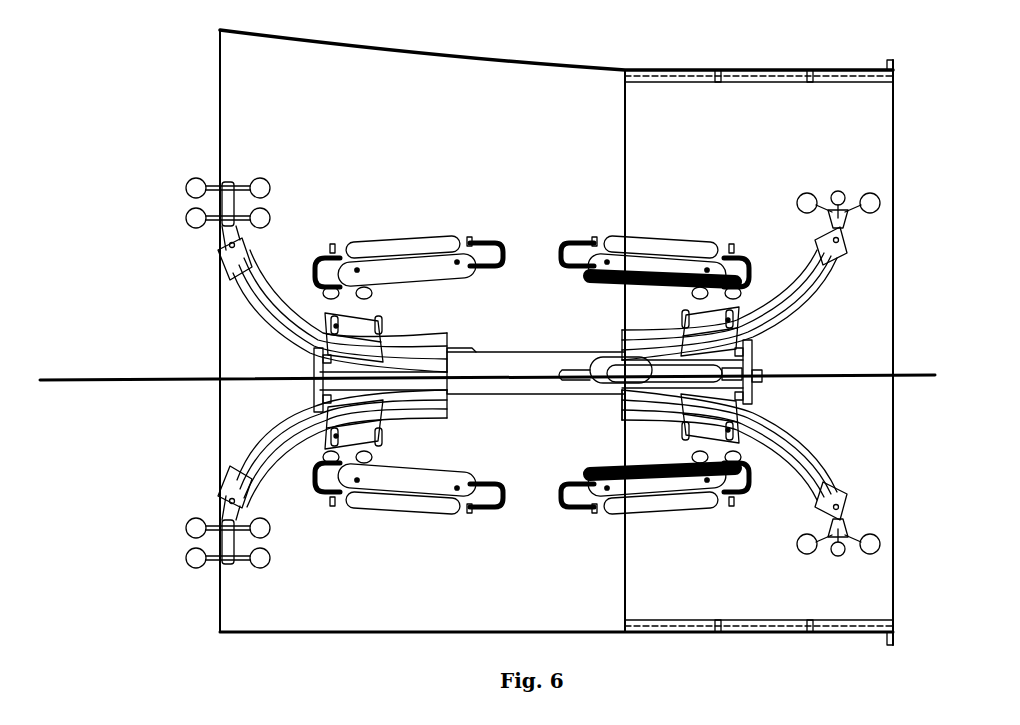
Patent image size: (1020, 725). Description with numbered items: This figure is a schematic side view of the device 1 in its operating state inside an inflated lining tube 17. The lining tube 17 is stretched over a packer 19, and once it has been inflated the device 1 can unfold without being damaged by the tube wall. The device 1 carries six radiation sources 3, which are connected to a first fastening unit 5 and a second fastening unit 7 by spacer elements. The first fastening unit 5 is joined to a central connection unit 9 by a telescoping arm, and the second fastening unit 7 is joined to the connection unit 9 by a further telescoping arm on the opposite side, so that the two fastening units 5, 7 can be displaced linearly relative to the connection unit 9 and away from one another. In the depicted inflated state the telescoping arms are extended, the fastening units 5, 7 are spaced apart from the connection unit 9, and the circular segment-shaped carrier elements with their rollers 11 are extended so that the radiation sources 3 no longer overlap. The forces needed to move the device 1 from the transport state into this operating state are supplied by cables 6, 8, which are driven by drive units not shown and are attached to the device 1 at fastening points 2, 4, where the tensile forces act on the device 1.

The device 1 is at (354, 214).
The fastening point 2 is at (304, 362).
The radiation source 3 is at (436, 246).
The fastening point 4 is at (764, 382).
The first fastening unit 5 is at (310, 376).
The cable 6 is at (172, 376).
The second fastening unit 7 is at (762, 366).
The cable 8 is at (810, 374).
The connection unit 9 is at (515, 388).
The roller 11 is at (192, 186).
The lining tube 17 is at (430, 54).
The packer 19 is at (766, 88).